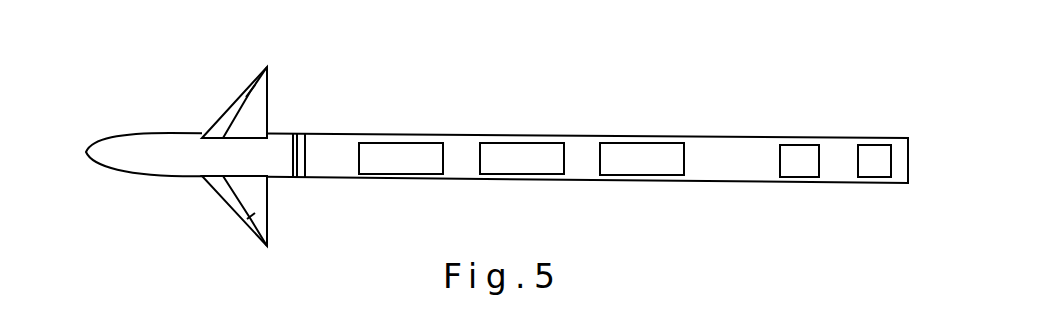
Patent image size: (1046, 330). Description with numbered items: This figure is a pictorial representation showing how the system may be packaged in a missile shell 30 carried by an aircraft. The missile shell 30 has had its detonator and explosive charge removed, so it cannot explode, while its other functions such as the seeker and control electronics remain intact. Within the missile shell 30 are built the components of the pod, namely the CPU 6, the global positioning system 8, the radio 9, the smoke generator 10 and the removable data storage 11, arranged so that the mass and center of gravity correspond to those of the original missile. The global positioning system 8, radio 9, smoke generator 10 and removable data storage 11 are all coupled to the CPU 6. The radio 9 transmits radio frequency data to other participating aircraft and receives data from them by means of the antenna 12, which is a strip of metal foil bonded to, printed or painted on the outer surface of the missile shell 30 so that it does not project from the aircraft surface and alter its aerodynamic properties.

The missile shell 30 is at (167, 158).
The antenna 12 is at (298, 180).
The global positioning system 8 is at (403, 174).
The CPU 6 is at (525, 174).
The smoke generator 10 is at (649, 177).
The radio 9 is at (800, 177).
The removable data storage 11 is at (877, 177).